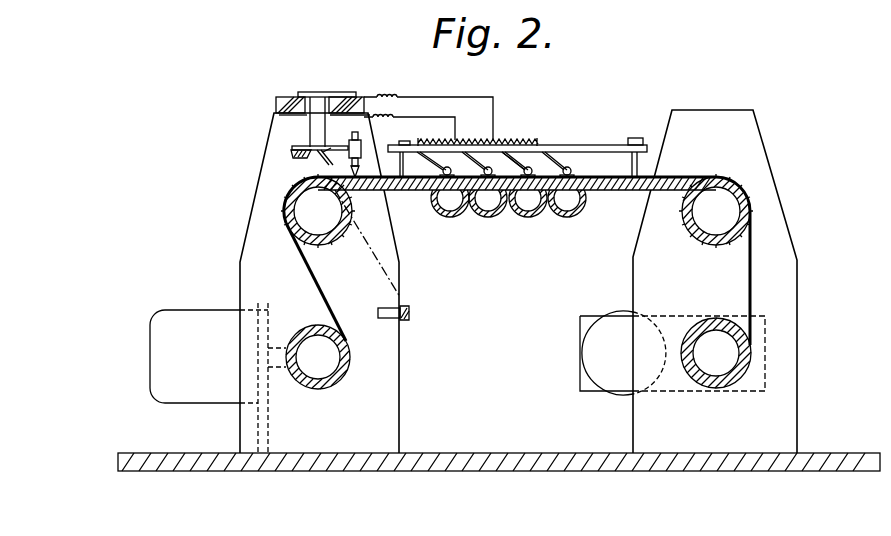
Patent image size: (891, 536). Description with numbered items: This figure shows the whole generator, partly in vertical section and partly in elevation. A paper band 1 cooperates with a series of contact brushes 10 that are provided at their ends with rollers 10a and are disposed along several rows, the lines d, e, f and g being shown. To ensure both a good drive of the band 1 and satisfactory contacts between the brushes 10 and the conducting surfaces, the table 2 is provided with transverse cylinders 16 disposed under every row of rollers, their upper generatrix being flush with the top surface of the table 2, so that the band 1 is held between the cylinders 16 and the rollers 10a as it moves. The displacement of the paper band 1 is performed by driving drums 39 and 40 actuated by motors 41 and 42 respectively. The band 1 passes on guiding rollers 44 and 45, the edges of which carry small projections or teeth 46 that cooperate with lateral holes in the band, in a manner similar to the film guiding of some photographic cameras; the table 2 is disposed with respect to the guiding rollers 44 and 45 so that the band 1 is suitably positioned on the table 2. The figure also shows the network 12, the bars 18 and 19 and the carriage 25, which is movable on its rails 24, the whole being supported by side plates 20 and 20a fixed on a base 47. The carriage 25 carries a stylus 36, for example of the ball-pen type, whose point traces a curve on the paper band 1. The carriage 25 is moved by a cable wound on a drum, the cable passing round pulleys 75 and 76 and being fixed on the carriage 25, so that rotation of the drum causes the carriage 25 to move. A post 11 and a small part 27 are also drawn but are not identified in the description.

The paper band 1 is at (316, 290).
The table 2 is at (601, 190).
The contact brushes 10 is at (545, 160).
The rollers 10a is at (488, 168).
The post 11 is at (633, 140).
The network 12 is at (513, 145).
The transverse cylinders 16 is at (453, 215).
The bar 18 is at (347, 97).
The bar 19 is at (290, 97).
The side plate 20 is at (380, 242).
The side plate 20a is at (784, 267).
The rails 24 is at (314, 147).
The carriage 25 is at (310, 134).
The clamp 27 is at (304, 164).
The stylus 36 is at (360, 160).
The driving drum 39 is at (338, 357).
The driving drum 40 is at (714, 336).
The motor 41 is at (203, 325).
The motor 42 is at (605, 354).
The guiding roller 44 is at (290, 218).
The guiding roller 45 is at (686, 224).
The teeth 46 is at (298, 194).
The base 47 is at (515, 460).
The pulley 75 is at (409, 313).
The pulley 76 is at (332, 165).
The line of brushes d is at (444, 166).
The line of brushes e is at (485, 165).
The line of brushes f is at (513, 192).
The line of brushes g is at (575, 165).